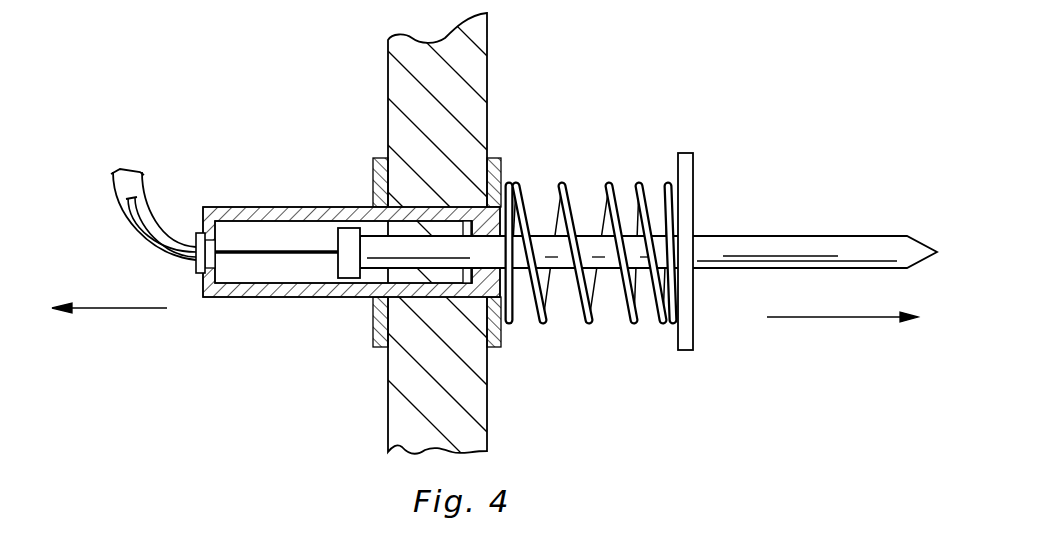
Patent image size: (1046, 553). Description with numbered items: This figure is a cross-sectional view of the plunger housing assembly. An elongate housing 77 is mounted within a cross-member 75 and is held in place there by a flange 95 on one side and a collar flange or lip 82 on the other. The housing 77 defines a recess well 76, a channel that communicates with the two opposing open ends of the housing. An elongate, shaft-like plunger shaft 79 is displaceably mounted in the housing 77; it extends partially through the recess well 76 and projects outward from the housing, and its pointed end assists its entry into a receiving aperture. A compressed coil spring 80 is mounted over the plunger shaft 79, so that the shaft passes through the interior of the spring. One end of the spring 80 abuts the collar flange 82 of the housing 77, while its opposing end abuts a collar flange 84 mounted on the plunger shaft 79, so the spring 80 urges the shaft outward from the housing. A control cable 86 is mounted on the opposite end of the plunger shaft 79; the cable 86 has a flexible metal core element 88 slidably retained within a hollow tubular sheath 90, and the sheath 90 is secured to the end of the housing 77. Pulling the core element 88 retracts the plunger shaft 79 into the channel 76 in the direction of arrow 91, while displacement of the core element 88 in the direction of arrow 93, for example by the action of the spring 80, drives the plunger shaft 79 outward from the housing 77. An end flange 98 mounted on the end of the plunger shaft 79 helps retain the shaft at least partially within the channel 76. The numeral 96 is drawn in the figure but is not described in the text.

The cross-member 75 is at (487, 437).
The recess well 76 is at (262, 232).
The housing 77 is at (304, 207).
The plunger shaft 79 is at (808, 236).
The coil spring 80 is at (560, 186).
The collar flange 82 is at (497, 162).
The collar flange 84 is at (692, 166).
The control cable 86 is at (146, 210).
The flexible metal core element 88 is at (158, 247).
The hollow tubular sheath 90 is at (118, 217).
The arrow 91 is at (118, 312).
The arrow 93 is at (845, 317).
The flange 95 is at (375, 166).
The slot 96 is at (466, 222).
The end flange 98 is at (347, 283).